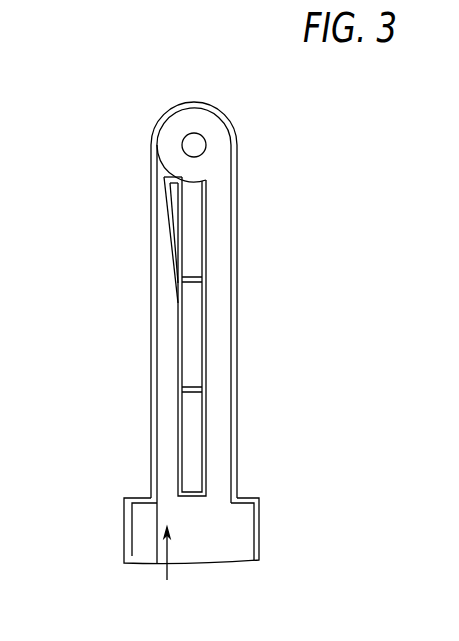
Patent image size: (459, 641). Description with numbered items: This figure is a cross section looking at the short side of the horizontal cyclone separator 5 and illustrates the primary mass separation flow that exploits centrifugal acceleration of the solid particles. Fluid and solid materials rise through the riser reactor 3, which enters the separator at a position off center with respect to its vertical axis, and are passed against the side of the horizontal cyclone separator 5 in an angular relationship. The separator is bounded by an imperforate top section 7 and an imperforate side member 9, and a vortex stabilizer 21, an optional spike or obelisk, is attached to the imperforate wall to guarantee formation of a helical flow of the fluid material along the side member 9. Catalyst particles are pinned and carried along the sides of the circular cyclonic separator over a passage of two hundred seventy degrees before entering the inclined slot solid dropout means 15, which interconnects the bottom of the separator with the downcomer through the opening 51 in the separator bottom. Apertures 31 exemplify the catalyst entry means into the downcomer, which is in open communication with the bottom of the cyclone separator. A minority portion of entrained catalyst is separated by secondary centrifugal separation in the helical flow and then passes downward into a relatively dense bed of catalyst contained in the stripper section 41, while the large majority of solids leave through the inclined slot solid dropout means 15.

The horizontal cyclone separator 5 is at (206, 54).
The riser reactor 3 is at (149, 302).
The imperforate top section 7 is at (164, 115).
The imperforate side member 9 is at (217, 156).
The vortex stabilizer 21 is at (197, 143).
The opening 51 is at (191, 184).
The inclined slot solid dropout means 15 is at (207, 223).
The apertures 31 is at (195, 336).
The stripper section 41 is at (216, 539).